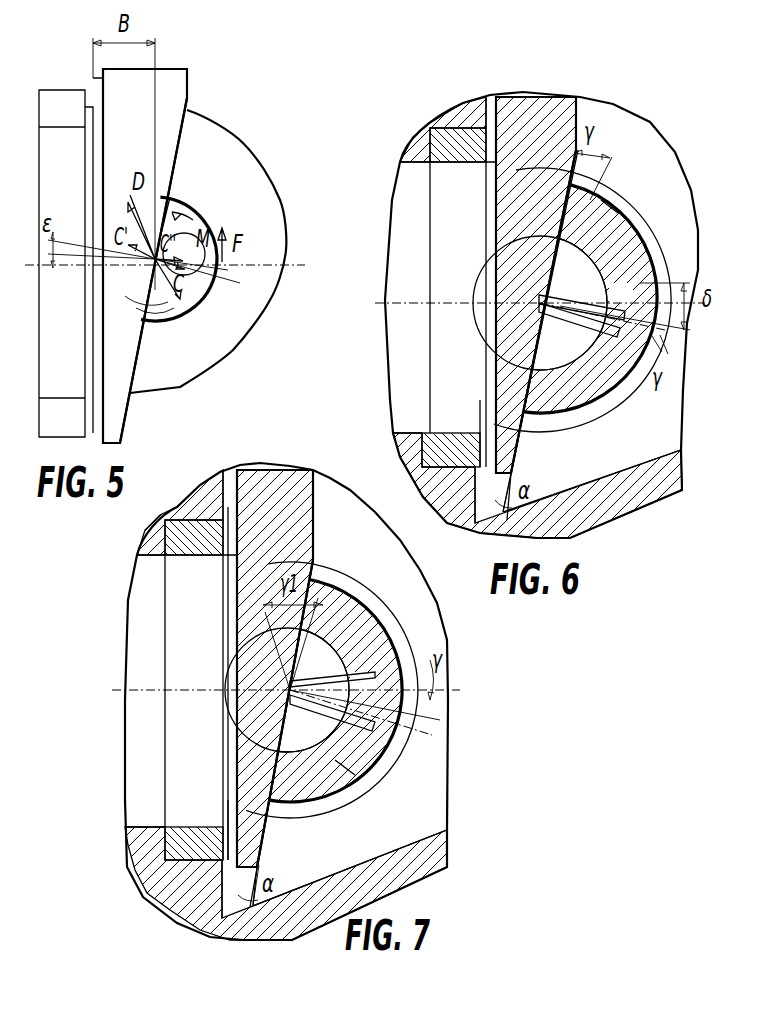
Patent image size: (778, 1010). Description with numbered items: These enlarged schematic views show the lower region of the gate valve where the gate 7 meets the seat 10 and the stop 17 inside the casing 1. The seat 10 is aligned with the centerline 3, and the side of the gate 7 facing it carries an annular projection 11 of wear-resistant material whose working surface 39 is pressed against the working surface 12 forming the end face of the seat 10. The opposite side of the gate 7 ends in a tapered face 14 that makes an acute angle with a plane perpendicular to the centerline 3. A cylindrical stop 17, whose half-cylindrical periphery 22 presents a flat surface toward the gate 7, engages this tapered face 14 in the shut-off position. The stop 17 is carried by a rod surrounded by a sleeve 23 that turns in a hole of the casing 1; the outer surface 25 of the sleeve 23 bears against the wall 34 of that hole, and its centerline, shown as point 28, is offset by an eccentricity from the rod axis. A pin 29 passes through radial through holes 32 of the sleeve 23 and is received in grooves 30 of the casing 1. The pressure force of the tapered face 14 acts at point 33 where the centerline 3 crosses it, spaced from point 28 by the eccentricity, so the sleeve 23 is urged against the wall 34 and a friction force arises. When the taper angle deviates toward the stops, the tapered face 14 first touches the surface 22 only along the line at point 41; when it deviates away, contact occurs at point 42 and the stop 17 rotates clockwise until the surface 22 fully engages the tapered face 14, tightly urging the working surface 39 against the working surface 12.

In FIG. 5, the casing 1 is at (282, 202).
In FIG. 6, the casing 1 is at (541, 315).
In FIG. 7, the casing 1 is at (286, 701).
In FIG. 5, the centerline 3 is at (287, 264).
In FIG. 5, the gate 7 is at (190, 98).
In FIG. 6, the gate 7 is at (558, 107).
In FIG. 7, the gate 7 is at (288, 480).
In FIG. 6, the seat 10 is at (452, 128).
In FIG. 7, the seat 10 is at (190, 520).
In FIG. 6, the annular projection 11 is at (491, 125).
In FIG. 7, the annular projection 11 is at (232, 500).
In FIG. 6, the working surface 12 is at (516, 466).
In FIG. 7, the working surface 12 is at (258, 858).
In FIG. 5, the tapered face 14 is at (178, 156).
In FIG. 6, the tapered face 14 is at (520, 441).
In FIG. 7, the tapered face 14 is at (266, 842).
In FIG. 5, the stop 17 is at (147, 300).
In FIG. 6, the stop 17 is at (608, 390).
In FIG. 7, the stop 17 is at (325, 725).
In FIG. 6, the periphery 22 is at (540, 285).
In FIG. 7, the periphery 22 is at (287, 712).
In FIG. 5, the sleeve 23 is at (206, 220).
In FIG. 6, the sleeve 23 is at (565, 405).
In FIG. 7, the sleeve 23 is at (300, 750).
In FIG. 5, the outer surface 25 is at (188, 306).
In FIG. 5, the point 28 is at (150, 261).
In FIG. 6, the pin 29 is at (630, 296).
In FIG. 7, the pin 29 is at (395, 742).
In FIG. 6, the groove 30 is at (660, 244).
In FIG. 7, the groove 30 is at (412, 660).
In FIG. 6, the through hole 32 is at (624, 212).
In FIG. 7, the through hole 32 is at (372, 780).
In FIG. 5, the point 33 is at (157, 307).
In FIG. 5, the wall 34 is at (206, 294).
In FIG. 6, the working surface 39 is at (483, 440).
In FIG. 7, the working surface 39 is at (226, 835).
In FIG. 6, the point 41 is at (515, 335).
In FIG. 7, the point 42 is at (287, 665).